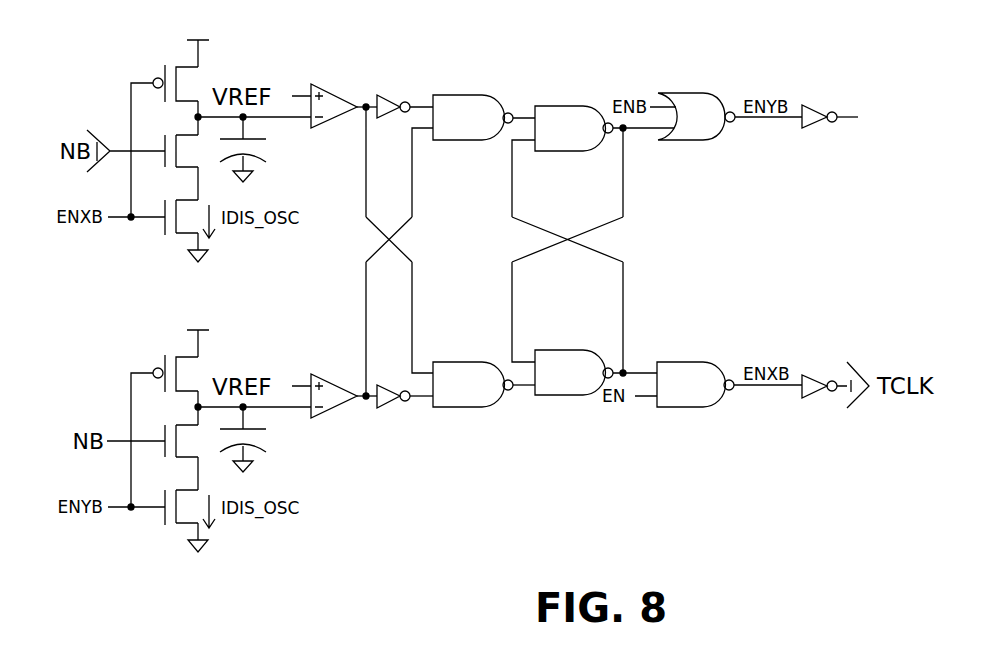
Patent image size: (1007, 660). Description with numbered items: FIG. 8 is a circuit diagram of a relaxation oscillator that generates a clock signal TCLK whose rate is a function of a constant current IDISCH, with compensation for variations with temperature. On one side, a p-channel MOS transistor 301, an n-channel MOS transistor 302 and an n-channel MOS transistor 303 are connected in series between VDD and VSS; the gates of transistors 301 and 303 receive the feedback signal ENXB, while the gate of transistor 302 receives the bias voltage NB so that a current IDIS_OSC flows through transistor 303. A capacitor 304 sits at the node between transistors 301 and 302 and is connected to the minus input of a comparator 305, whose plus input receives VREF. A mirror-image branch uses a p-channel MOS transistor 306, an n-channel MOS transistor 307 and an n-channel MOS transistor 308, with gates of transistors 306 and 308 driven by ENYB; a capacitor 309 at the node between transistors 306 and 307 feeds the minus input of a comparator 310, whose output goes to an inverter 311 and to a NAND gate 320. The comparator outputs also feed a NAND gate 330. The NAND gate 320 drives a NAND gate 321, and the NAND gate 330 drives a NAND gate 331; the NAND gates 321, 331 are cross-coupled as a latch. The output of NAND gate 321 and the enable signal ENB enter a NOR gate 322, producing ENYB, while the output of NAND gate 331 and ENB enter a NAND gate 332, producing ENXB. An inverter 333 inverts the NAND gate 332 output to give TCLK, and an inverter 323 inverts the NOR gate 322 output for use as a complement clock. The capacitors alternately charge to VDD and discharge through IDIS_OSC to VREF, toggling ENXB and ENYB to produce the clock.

The p-channel MOS transistor 301 is at (177, 72).
The n-channel MOS transistor 302 is at (185, 135).
The n-channel MOS transistor 303 is at (186, 233).
The capacitor 304 is at (250, 139).
The comparator 305 is at (333, 100).
The p-channel MOS transistor 306 is at (393, 98).
The n-channel MOS transistor 307 is at (185, 425).
The n-channel MOS transistor 308 is at (187, 523).
The capacitor 309 is at (250, 429).
The comparator 310 is at (330, 390).
The inverter 311 is at (385, 400).
The NAND gate 320 is at (478, 98).
The NAND gate 321 is at (563, 113).
The NOR gate 322 is at (705, 103).
The inverter 323 is at (807, 125).
The NAND gate 330 is at (478, 390).
The NAND gate 331 is at (580, 385).
The NAND gate 332 is at (707, 392).
The inverter 333 is at (807, 393).